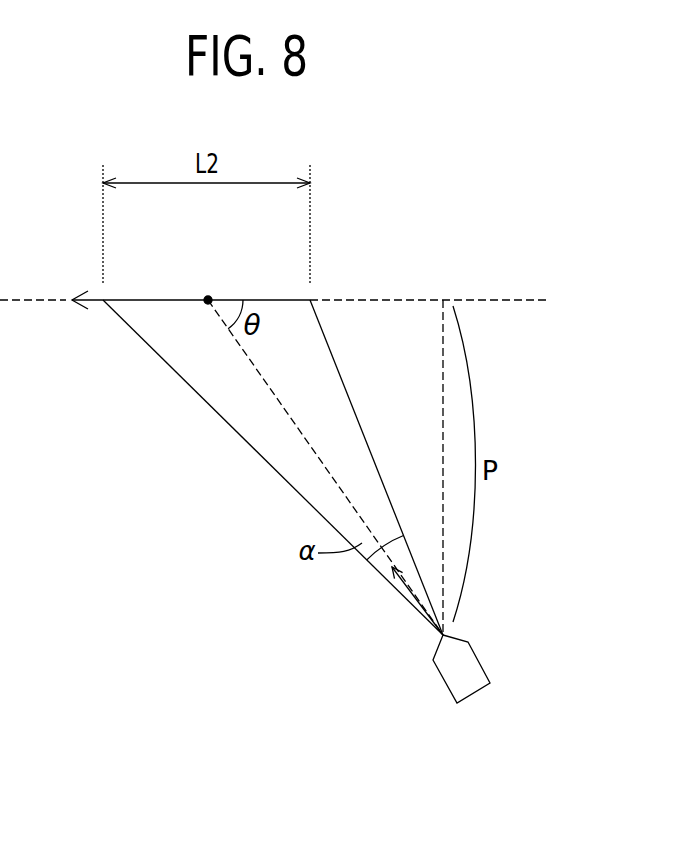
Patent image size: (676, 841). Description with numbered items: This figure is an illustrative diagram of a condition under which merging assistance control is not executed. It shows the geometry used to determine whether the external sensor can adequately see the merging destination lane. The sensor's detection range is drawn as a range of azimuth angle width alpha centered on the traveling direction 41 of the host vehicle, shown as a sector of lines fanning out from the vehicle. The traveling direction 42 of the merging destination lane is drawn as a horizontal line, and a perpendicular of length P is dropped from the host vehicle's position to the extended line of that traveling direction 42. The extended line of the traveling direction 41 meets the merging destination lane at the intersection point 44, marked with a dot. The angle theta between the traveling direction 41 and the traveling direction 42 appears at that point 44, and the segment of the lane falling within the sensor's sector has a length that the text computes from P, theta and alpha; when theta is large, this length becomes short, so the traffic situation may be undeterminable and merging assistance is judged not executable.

The traveling direction 41 is at (410, 595).
The traveling direction of the merging destination lane 42 is at (148, 302).
The intersection point 44 is at (208, 296).